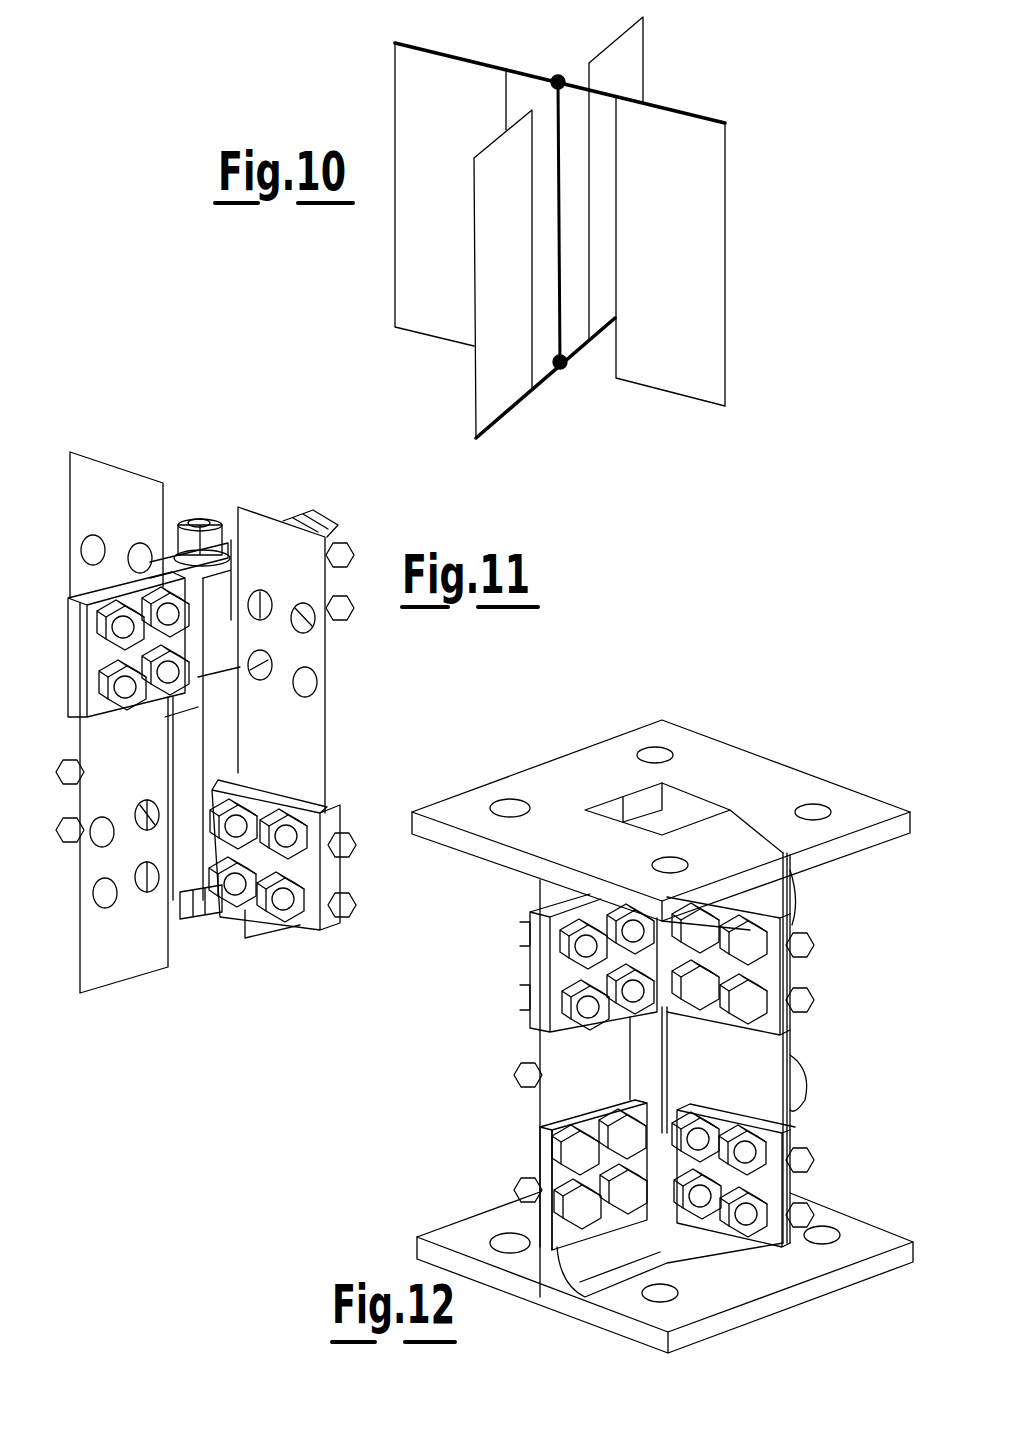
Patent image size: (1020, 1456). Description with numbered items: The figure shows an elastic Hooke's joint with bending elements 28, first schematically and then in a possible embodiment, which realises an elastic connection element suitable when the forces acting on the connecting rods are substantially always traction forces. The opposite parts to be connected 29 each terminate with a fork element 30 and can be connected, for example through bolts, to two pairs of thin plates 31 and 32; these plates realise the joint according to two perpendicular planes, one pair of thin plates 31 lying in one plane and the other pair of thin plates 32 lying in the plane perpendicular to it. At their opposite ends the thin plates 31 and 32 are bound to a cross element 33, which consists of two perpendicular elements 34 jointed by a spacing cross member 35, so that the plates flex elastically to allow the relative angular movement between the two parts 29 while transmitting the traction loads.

In FIG. 10, the elastic Hooke's joint with bending elements 28 is at (770, 80).
In FIG. 11, the elastic Hooke's joint with bending elements 28 is at (200, 442).
In FIG. 12, the elastic Hooke's joint with bending elements 28 is at (834, 722).
In FIG. 12, the opposite parts to be connected 29 is at (572, 762).
In FIG. 12, the fork element 30 is at (653, 822).
In FIG. 10, the thin plates 31 is at (438, 78).
In FIG. 11, the thin plates 31 is at (103, 478).
In FIG. 12, the thin plates 31 is at (765, 1065).
In FIG. 10, the thin plates 32 is at (616, 57).
In FIG. 11, the thin plates 32 is at (110, 745).
In FIG. 12, the thin plates 32 is at (573, 1062).
In FIG. 10, the cross element 33 is at (548, 390).
In FIG. 11, the cross element 33 is at (194, 522).
In FIG. 10, the perpendicular elements 34 is at (485, 62).
In FIG. 11, the perpendicular elements 34 is at (232, 545).
In FIG. 12, the perpendicular elements 34 is at (650, 950).
In FIG. 10, the spacing cross member 35 is at (563, 247).
In FIG. 11, the spacing cross member 35 is at (233, 735).
In FIG. 12, the spacing cross member 35 is at (677, 1042).